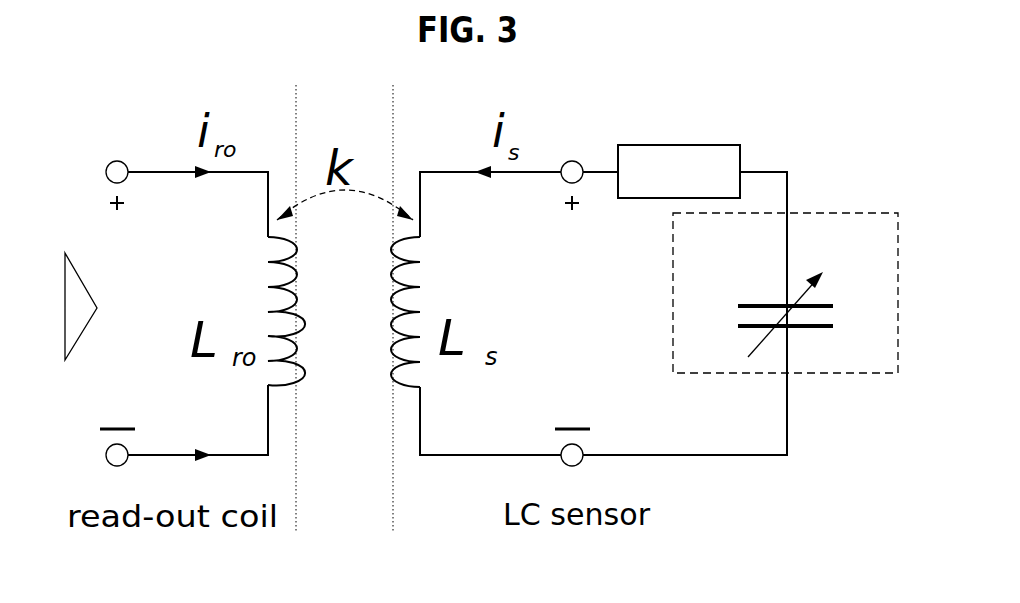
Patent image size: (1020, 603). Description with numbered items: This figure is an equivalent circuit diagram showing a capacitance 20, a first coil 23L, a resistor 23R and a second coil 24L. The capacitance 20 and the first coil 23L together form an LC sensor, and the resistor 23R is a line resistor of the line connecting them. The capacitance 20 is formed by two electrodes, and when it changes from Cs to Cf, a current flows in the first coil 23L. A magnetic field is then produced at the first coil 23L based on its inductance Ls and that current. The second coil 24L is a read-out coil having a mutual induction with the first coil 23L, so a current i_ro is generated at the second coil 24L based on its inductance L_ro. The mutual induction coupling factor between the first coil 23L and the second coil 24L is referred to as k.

The second coil 24L is at (245, 266).
The first coil 23L is at (432, 268).
The resistor 23R is at (718, 145).
The capacitance 20 is at (836, 375).